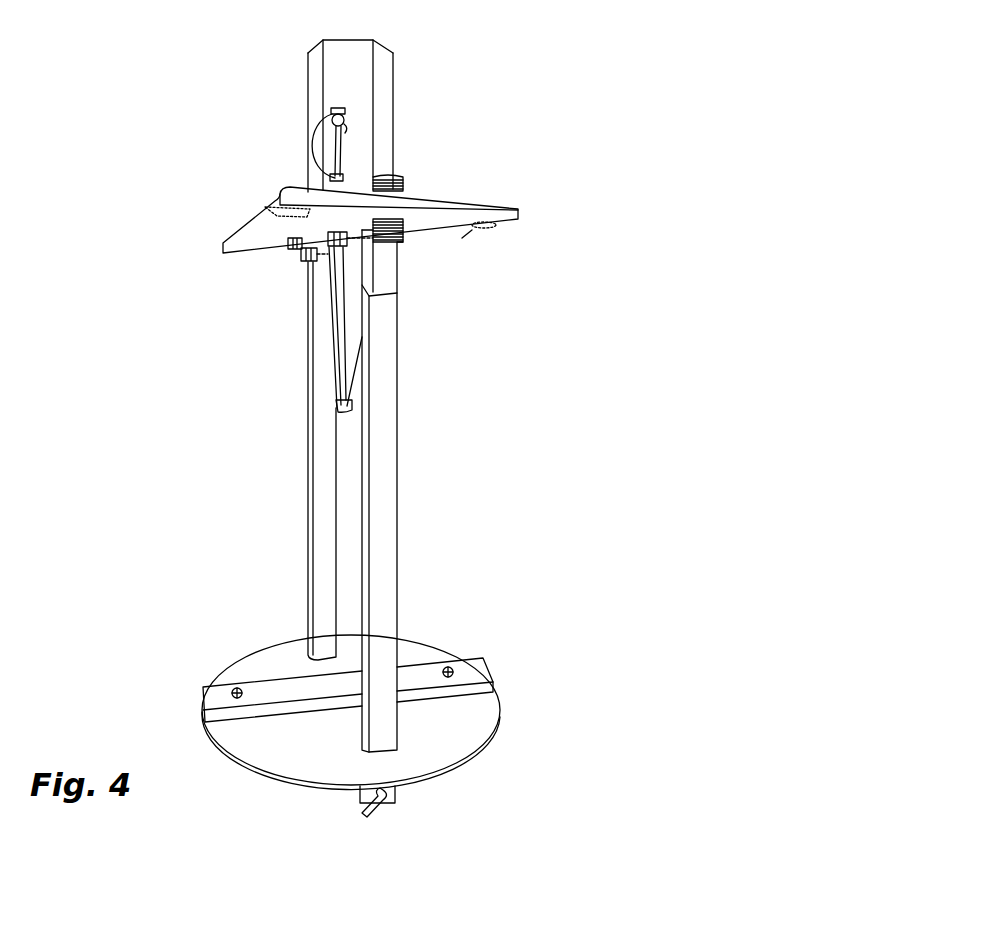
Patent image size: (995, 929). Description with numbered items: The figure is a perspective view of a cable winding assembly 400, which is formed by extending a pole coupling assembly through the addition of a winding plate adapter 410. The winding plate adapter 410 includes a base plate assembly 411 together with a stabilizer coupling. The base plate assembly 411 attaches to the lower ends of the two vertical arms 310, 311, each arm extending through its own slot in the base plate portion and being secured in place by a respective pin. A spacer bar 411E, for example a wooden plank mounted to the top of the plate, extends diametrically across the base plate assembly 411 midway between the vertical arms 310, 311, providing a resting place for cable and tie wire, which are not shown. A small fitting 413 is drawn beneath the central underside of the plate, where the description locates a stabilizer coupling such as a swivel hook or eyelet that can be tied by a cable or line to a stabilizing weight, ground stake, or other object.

The cable winding assembly 400 is at (550, 65).
The vertical arm 310 is at (310, 391).
The vertical arm 311 is at (402, 398).
The winding plate adapter 410 is at (428, 640).
The base plate assembly 411 is at (255, 647).
The spacer bar 411E is at (482, 665).
The connector fitting 413 is at (385, 812).